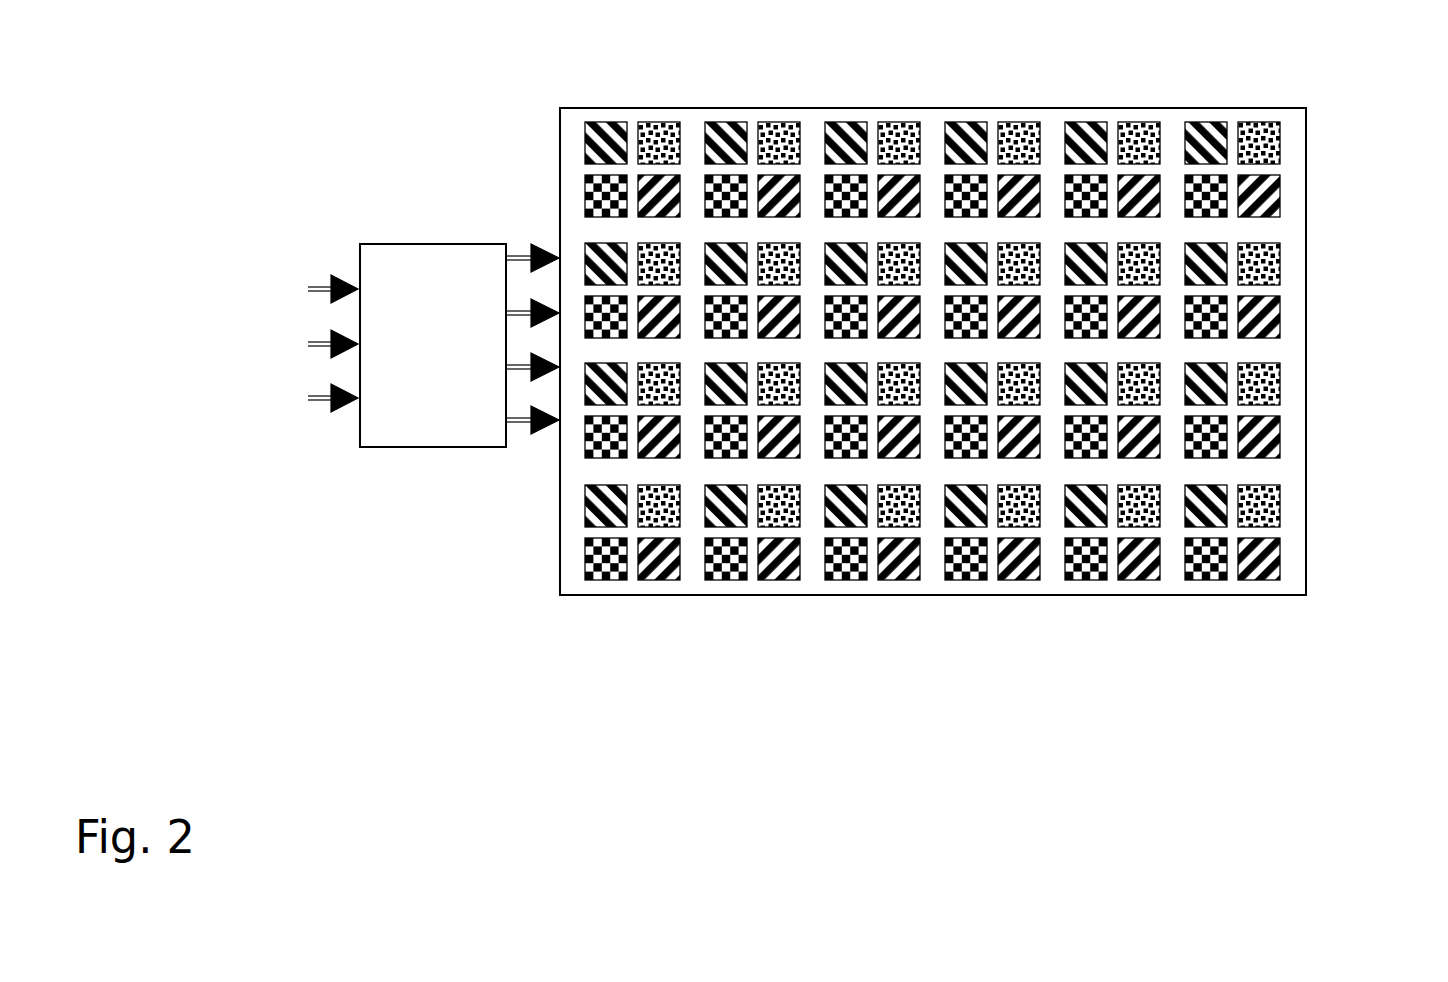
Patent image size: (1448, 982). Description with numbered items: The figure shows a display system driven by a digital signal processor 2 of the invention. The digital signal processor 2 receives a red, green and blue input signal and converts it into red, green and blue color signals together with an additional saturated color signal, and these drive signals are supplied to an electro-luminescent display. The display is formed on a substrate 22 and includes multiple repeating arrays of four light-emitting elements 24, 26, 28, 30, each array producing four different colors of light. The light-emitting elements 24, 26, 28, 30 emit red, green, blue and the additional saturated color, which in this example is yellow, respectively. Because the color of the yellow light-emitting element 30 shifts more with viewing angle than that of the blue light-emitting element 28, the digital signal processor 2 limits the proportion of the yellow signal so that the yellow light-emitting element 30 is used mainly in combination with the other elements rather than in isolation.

The digital signal processor 2 is at (377, 243).
The substrate 22 is at (997, 304).
The light-emitting element 24 is at (1202, 120).
The light-emitting element 26 is at (1270, 148).
The light-emitting element 28 is at (1203, 210).
The yellow light-emitting element 30 is at (1270, 198).